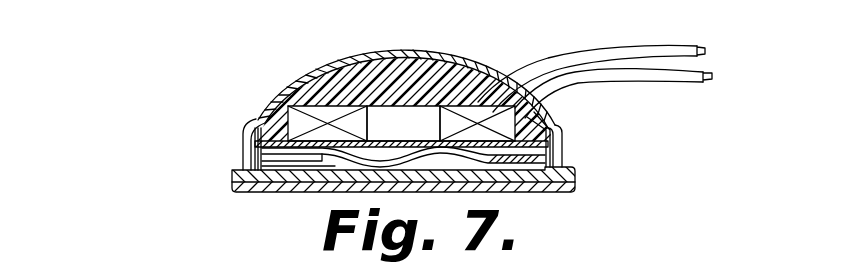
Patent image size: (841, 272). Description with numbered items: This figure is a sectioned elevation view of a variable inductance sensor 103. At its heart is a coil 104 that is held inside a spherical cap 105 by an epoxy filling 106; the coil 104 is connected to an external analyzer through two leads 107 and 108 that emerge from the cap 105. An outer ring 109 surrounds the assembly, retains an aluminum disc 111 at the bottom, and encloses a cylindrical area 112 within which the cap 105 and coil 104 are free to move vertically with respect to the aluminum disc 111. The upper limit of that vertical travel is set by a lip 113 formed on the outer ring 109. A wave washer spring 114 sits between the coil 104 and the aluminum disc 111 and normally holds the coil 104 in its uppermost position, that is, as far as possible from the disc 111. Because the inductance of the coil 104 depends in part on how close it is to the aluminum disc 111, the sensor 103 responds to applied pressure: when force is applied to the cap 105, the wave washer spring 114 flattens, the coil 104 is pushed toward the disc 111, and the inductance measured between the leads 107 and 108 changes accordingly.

The variable inductance sensor 103 is at (134, 75).
The coil 104 is at (327, 106).
The spherical cap 105 is at (457, 64).
The epoxy filling 106 is at (398, 80).
The lead 107 is at (704, 50).
The lead 108 is at (710, 79).
The outer ring 109 is at (243, 156).
The aluminum disc 111 is at (236, 181).
The cylindrical area 112 is at (560, 152).
The lip 113 is at (557, 140).
The wave washer spring 114 is at (296, 153).